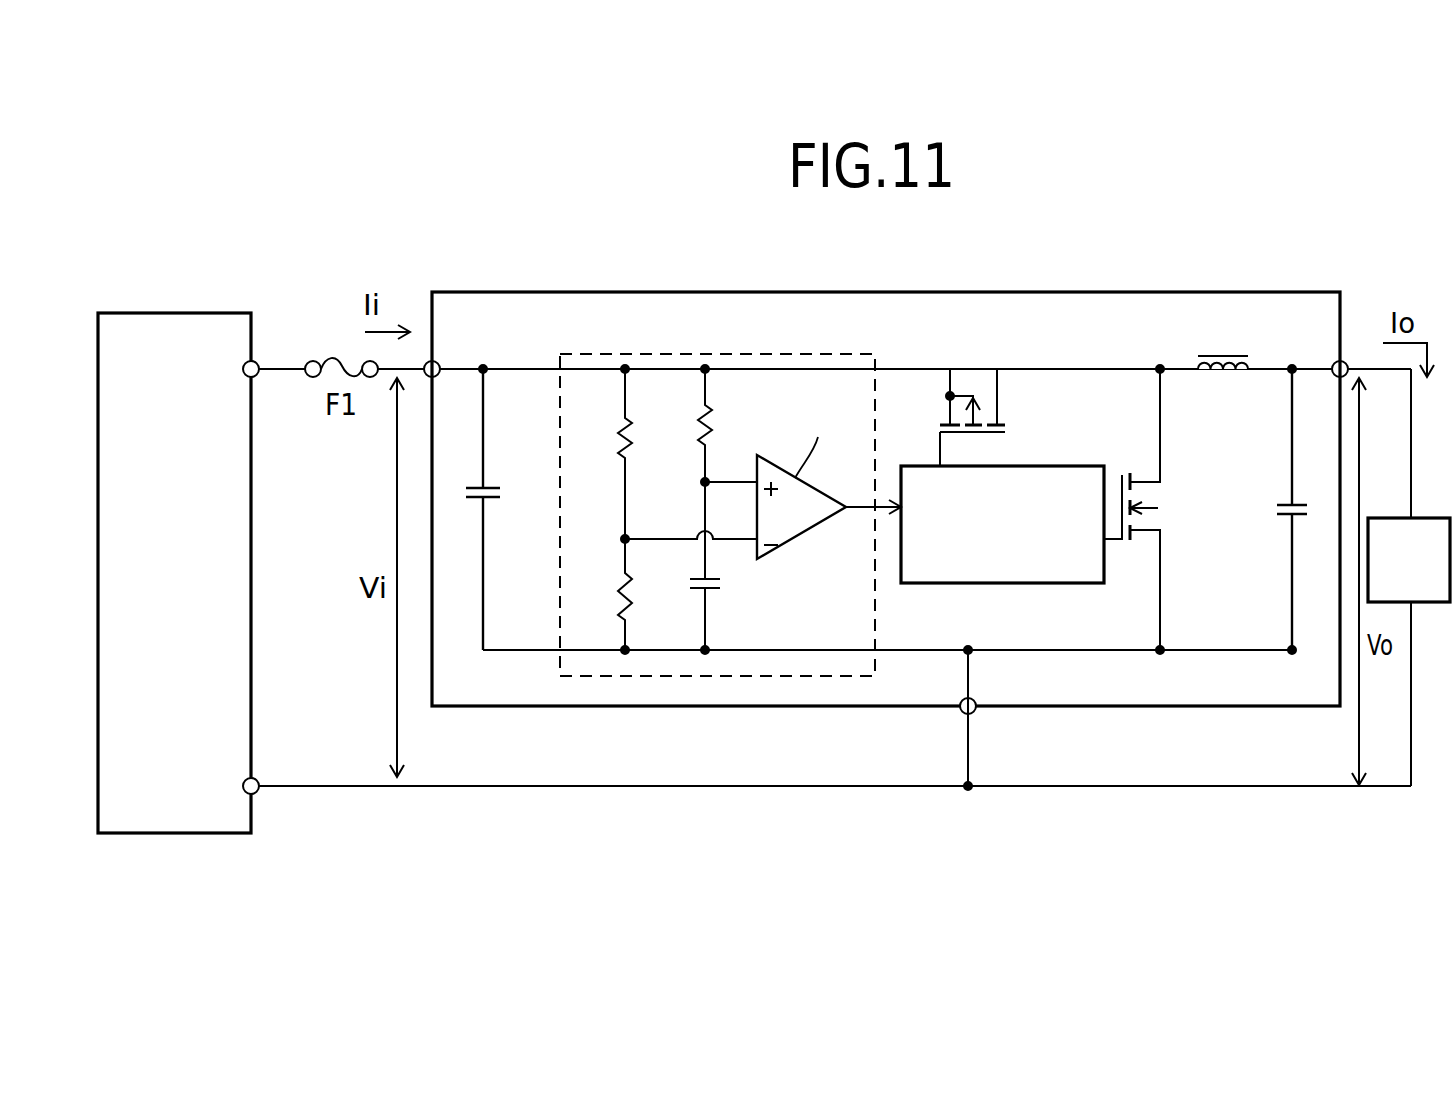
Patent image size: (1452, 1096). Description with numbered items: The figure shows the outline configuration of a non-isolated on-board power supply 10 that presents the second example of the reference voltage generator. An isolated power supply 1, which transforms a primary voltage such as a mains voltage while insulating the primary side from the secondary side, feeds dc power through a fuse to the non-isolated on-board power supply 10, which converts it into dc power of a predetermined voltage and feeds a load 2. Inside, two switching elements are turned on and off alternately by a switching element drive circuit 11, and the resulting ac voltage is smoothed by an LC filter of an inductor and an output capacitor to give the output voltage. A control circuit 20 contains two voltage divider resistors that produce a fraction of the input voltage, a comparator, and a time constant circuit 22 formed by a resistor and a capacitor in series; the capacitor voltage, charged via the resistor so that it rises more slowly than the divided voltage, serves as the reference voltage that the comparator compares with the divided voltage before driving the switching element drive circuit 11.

The isolated power supply 1 is at (176, 313).
The load 2 is at (1428, 518).
The non-isolated on-board power supply 10 is at (1275, 292).
The switching element drive circuit 11 is at (1000, 583).
The control circuit 20 is at (832, 354).
The time constant circuit 22 is at (744, 620).